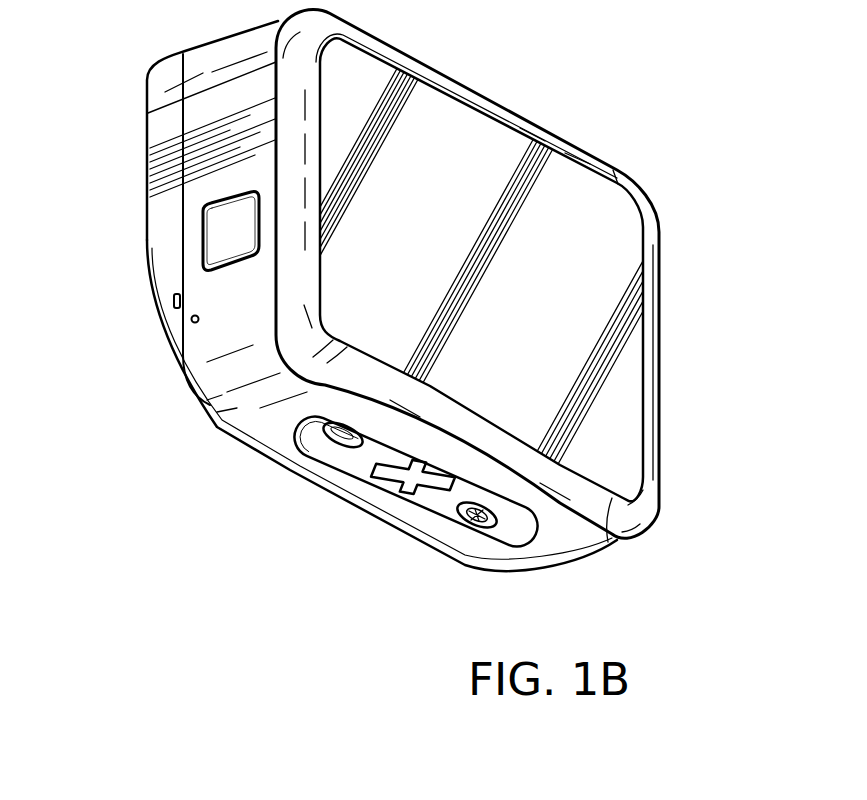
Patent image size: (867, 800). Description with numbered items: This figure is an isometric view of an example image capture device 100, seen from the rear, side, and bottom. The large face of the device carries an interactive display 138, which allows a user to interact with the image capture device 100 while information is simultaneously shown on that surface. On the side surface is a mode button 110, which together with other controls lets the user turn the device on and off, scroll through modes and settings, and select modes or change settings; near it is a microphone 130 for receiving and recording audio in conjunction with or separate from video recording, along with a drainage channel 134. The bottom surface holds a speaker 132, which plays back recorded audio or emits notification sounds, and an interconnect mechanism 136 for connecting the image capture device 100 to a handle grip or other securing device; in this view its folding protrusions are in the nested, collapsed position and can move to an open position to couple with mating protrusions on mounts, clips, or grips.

The image capture device 100 is at (644, 93).
The mode button 110 is at (213, 237).
The microphone 130 is at (190, 322).
The speaker 132 is at (478, 522).
The drainage channel 134 is at (176, 300).
The interconnect mechanism 136 is at (347, 460).
The interactive display 138 is at (617, 390).